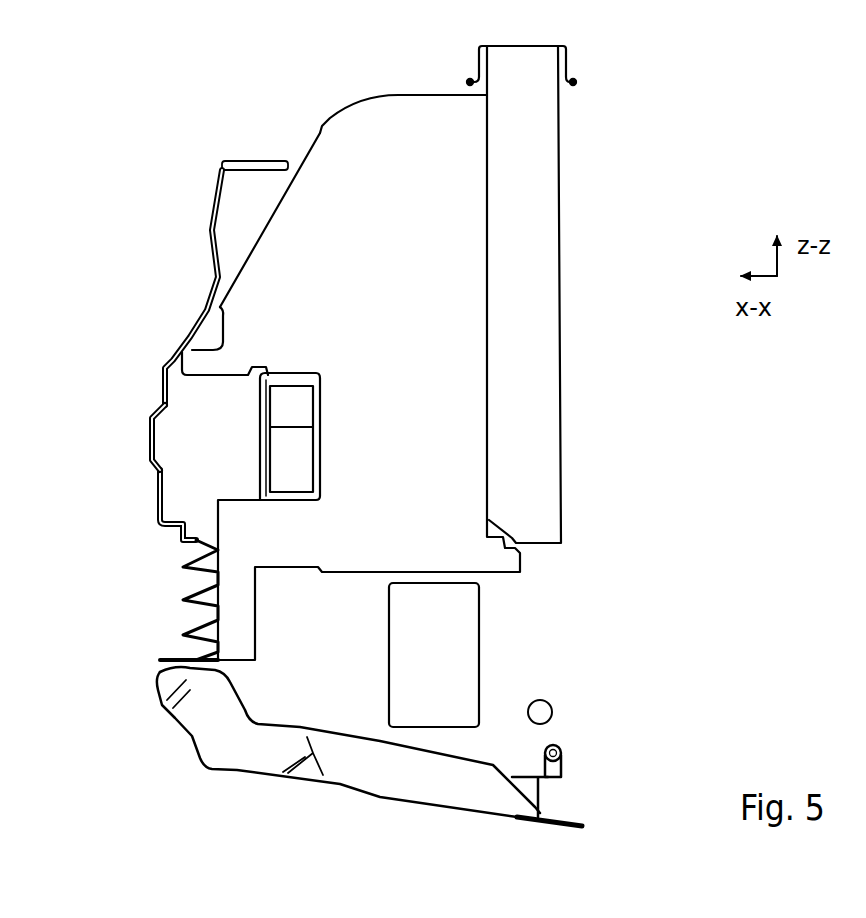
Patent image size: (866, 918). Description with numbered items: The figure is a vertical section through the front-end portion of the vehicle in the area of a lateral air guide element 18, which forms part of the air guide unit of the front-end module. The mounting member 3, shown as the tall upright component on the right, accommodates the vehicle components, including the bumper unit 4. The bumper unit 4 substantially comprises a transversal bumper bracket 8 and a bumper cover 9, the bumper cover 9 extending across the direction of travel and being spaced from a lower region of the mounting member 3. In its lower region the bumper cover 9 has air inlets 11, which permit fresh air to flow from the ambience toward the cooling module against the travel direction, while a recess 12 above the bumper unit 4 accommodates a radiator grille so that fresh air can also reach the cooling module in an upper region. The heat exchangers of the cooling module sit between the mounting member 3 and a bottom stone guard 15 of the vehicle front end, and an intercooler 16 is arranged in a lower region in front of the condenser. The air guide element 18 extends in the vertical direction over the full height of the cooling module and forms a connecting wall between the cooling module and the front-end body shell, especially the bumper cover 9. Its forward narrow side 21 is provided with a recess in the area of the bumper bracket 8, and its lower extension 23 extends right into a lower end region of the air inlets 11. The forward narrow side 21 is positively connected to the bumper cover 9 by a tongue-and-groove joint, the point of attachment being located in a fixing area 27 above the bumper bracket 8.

The mounting member 3 is at (508, 342).
The bumper unit 4 is at (187, 181).
The bumper bracket 8 is at (254, 406).
The bumper cover 9 is at (201, 259).
The air inlets 11 is at (168, 597).
The recess 12 is at (198, 405).
The stone guard 15 is at (237, 770).
The intercooler 16 is at (476, 651).
The air guide element 18 is at (338, 181).
The forward narrow side 21 is at (237, 240).
The lower extension 23 is at (232, 622).
The fixing area 27 is at (201, 333).